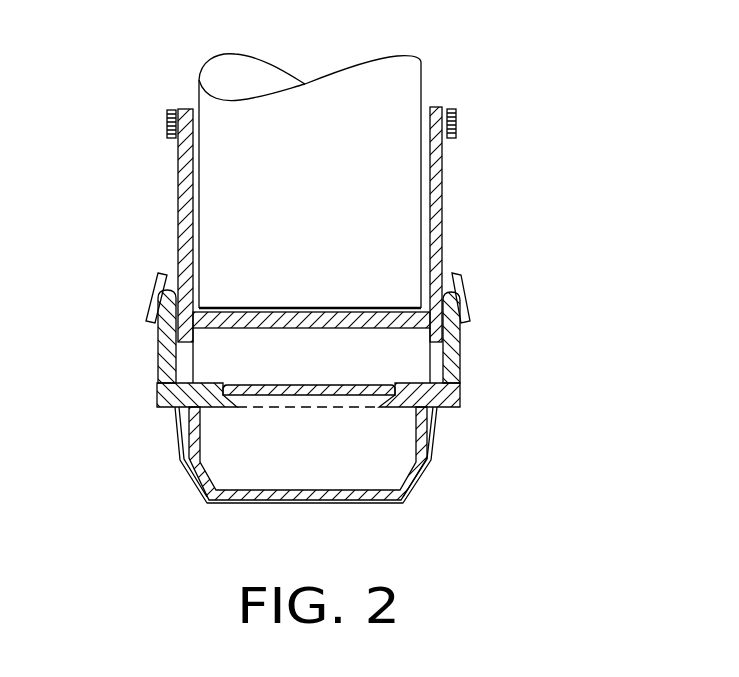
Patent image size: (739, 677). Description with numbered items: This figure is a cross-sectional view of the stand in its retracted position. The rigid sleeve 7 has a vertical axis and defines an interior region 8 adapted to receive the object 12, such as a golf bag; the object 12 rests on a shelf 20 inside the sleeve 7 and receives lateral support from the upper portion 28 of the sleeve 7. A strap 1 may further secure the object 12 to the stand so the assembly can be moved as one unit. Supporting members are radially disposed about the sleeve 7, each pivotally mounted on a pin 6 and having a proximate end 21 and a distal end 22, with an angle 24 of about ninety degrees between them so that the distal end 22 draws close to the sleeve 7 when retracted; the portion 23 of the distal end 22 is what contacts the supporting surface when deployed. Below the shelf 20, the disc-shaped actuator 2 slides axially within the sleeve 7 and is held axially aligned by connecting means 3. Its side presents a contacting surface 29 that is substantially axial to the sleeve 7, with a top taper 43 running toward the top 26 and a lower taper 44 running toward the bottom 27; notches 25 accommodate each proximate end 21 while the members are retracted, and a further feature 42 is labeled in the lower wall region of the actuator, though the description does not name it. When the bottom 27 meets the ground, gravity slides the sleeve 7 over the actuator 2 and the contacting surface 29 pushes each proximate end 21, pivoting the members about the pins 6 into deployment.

The strap 1 is at (167, 123).
The actuator 2 is at (265, 495).
The connecting means 3 is at (178, 445).
The pin 6 is at (450, 398).
The sleeve 7 is at (177, 222).
The interior region 8 is at (324, 271).
The object 12 is at (403, 92).
The shelf 20 is at (225, 318).
The proximate end 21 is at (173, 408).
The distal end 22 is at (158, 360).
The portion of distal end 23 is at (463, 293).
The angle 24 is at (450, 412).
The notches 25 is at (237, 387).
The top 26 is at (332, 387).
The bottom 27 is at (333, 503).
The upper portion 28 is at (440, 167).
The contacting surface 29 is at (427, 458).
The liner 42 is at (205, 448).
The top taper 43 is at (208, 408).
The lower taper 44 is at (215, 488).